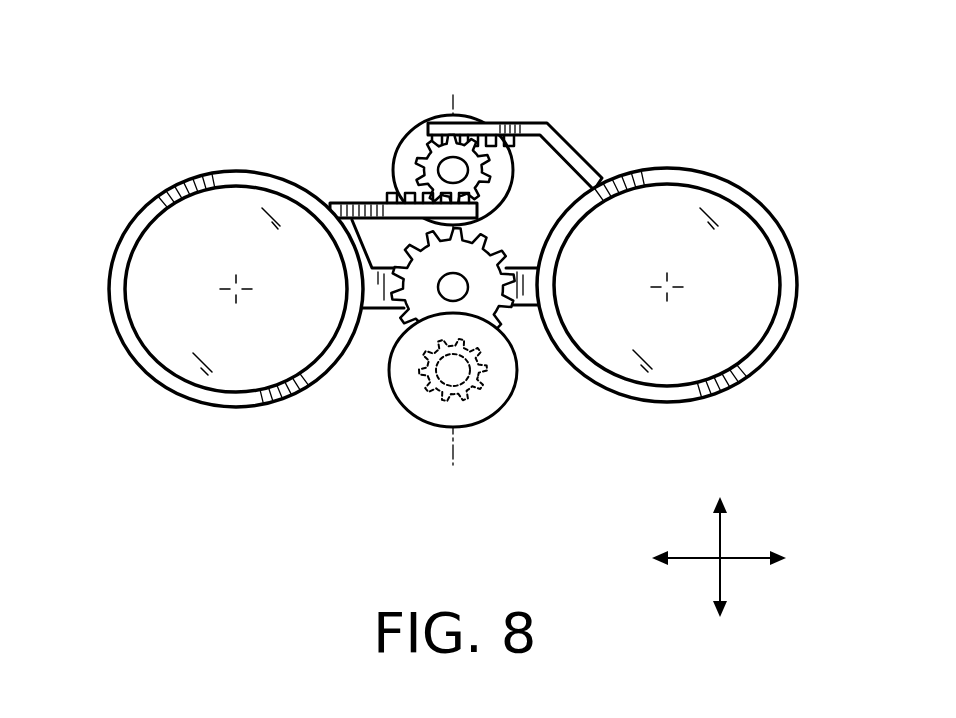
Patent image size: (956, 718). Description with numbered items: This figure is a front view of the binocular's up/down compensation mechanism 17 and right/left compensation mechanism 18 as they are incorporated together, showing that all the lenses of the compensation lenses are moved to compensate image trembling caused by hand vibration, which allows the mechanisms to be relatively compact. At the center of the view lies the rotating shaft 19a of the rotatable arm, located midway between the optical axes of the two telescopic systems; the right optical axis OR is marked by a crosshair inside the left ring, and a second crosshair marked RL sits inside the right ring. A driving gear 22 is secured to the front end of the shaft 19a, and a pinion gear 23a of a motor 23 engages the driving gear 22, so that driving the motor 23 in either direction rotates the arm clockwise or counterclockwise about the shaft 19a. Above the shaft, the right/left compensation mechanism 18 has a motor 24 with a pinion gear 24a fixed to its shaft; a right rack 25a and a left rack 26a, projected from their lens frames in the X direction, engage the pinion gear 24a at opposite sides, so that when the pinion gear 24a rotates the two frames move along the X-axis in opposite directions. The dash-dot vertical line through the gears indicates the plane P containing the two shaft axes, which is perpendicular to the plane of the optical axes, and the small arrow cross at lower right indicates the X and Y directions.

The right/left compensation mechanism 18 is at (634, 100).
The up/down compensation mechanism 17 is at (316, 442).
The left rack 26a is at (527, 122).
The right rack 25a is at (392, 203).
The motor 24 is at (496, 180).
The pinion gear 24a is at (422, 168).
The driving gear 22 is at (404, 268).
The rotating shaft 19a is at (462, 283).
The motor 23 is at (418, 388).
The pinion gear 23a is at (485, 395).
The optical axis OR is at (236, 289).
The right optical axis RL is at (668, 290).
The plane P is at (453, 440).
The X-axis X is at (734, 558).
The Y axis Y is at (736, 552).